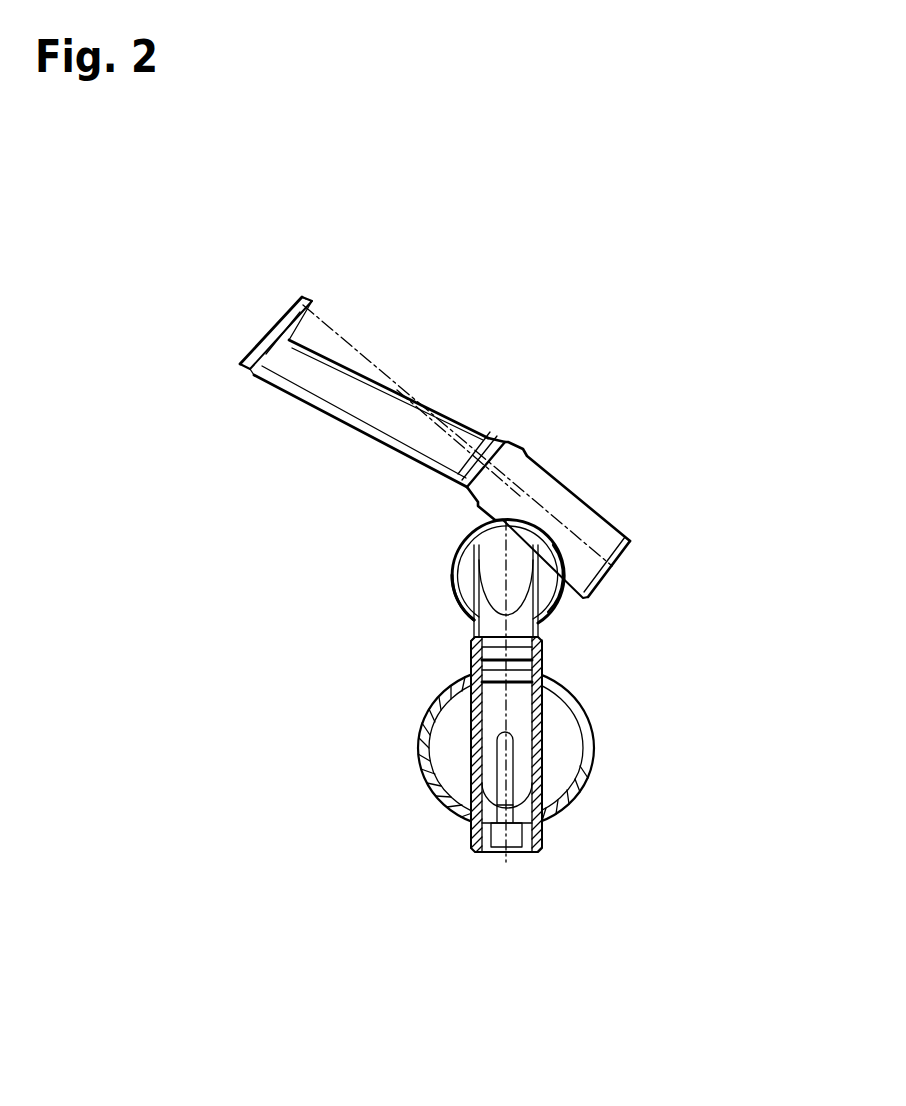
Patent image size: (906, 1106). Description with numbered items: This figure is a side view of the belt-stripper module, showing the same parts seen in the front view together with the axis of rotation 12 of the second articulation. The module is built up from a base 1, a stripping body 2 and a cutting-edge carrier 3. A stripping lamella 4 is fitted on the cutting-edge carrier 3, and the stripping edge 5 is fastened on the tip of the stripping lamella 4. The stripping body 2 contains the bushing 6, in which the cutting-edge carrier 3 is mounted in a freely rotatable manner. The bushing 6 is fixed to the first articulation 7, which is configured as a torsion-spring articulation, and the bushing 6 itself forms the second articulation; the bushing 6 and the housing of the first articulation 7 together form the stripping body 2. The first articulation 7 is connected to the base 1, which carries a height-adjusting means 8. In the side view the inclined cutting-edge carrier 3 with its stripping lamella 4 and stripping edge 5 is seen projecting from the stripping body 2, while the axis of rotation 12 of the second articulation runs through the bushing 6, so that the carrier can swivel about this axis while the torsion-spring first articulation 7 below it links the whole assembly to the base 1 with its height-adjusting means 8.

The base 1 is at (520, 735).
The stripping body 2 is at (458, 558).
The cutting-edge carrier 3 is at (368, 405).
The stripping lamella 4 is at (238, 365).
The stripping edge 5 is at (308, 294).
The bushing 6 is at (582, 513).
The first articulation 7 is at (453, 595).
The height-adjusting means 8 is at (515, 663).
The axis of rotation of the second articulation 12 is at (618, 575).